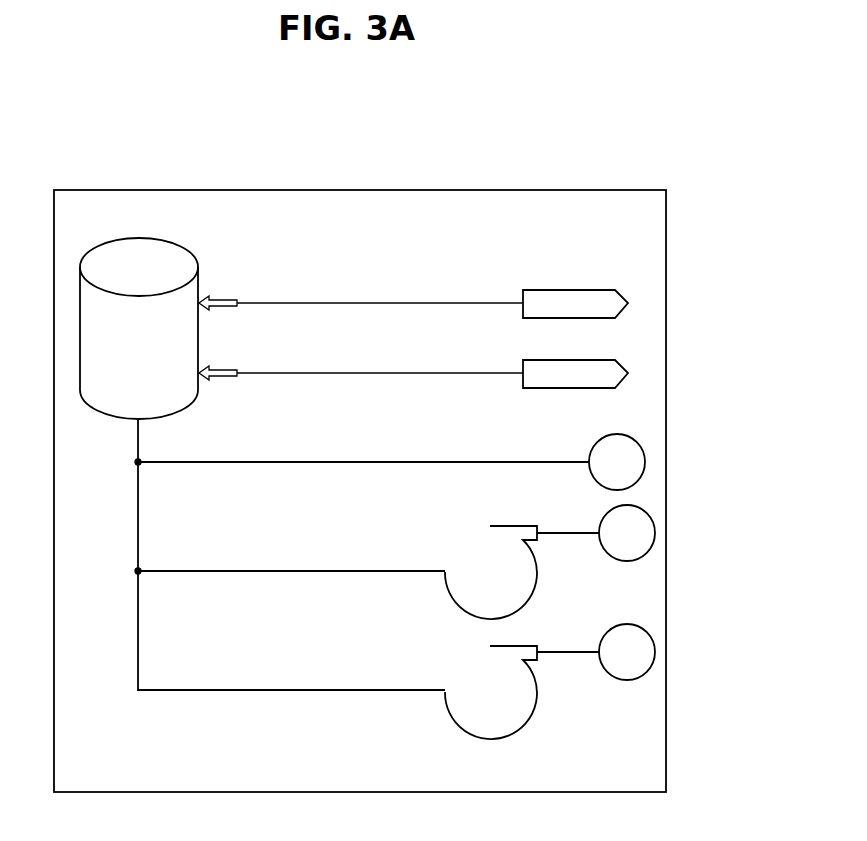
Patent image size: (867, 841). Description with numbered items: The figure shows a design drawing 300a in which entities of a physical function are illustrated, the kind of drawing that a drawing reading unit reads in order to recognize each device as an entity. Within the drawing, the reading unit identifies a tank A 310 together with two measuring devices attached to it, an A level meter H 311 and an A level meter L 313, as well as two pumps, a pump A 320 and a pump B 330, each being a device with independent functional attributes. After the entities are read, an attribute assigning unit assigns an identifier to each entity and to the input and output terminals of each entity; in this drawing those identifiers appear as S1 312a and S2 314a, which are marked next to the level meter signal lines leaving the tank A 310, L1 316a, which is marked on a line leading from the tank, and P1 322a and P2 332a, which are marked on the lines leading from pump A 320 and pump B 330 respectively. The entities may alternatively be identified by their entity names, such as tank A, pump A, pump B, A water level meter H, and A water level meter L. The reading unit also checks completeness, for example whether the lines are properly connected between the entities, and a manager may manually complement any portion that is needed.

The design drawing 300a is at (415, 190).
The tank A 310 is at (142, 236).
The A level meter H 311 is at (441, 283).
The identification number S1 312a is at (565, 288).
The A level meter L 313 is at (441, 353).
The identification number S2 314a is at (565, 359).
The identification number L1 316a is at (645, 462).
The pump A 320 is at (492, 525).
The identification number P1 322a is at (655, 533).
The pump B 330 is at (492, 645).
The identification number P2 332a is at (655, 652).